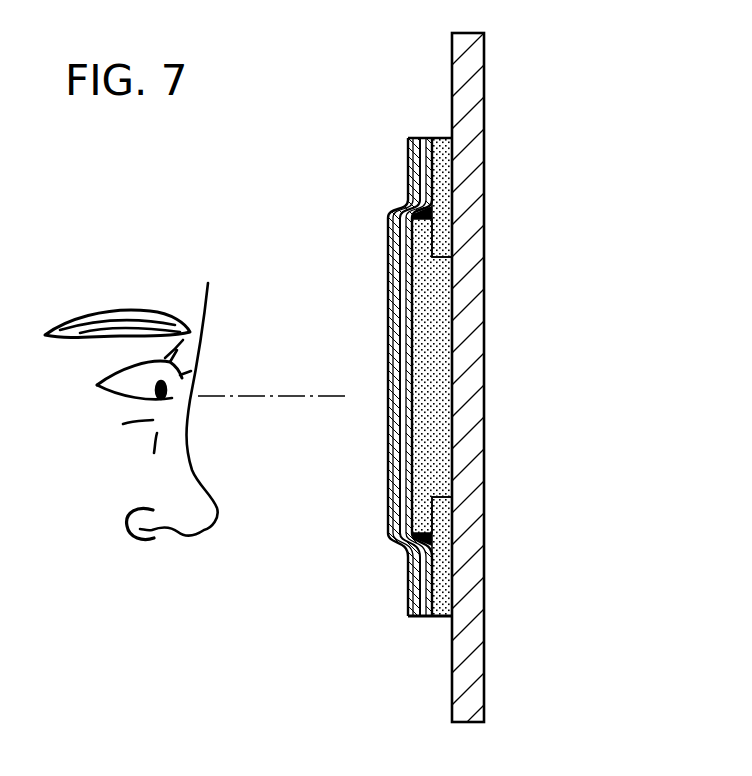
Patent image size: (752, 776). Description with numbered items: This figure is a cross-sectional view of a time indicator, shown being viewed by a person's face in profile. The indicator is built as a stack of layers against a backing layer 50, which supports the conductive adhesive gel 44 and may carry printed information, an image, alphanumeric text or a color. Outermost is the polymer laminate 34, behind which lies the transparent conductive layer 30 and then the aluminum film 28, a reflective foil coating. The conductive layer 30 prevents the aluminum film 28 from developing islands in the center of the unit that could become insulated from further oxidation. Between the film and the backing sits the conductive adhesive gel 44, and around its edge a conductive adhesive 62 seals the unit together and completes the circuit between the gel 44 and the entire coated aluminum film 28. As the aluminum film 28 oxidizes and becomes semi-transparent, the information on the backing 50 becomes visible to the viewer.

The aluminum film 28 is at (426, 355).
The transparent conductive layer 30 is at (418, 138).
The polymer laminate 34 is at (407, 146).
The conductive adhesive gel 44 is at (438, 333).
The backing layer 50 is at (473, 181).
The conductive adhesive 62 is at (442, 138).